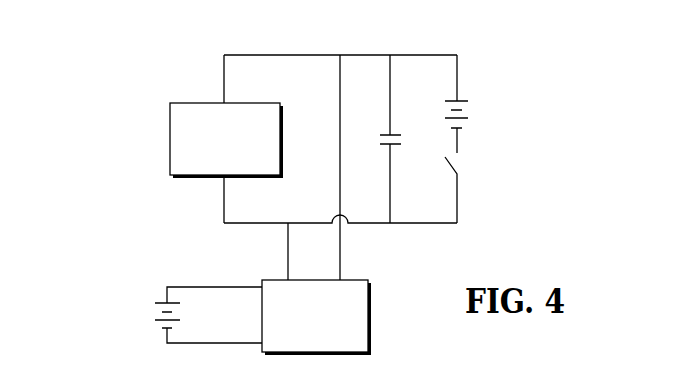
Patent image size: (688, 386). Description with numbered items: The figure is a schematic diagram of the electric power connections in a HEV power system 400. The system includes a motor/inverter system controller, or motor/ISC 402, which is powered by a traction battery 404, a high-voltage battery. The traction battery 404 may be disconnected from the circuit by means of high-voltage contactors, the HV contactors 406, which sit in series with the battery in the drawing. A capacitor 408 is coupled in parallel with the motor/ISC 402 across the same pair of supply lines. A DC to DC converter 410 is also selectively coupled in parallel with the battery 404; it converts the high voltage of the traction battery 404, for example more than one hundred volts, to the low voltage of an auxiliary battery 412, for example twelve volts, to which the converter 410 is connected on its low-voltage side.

The HEV power system 400 is at (575, 63).
The motor/inverter system controller (ISC) 402 is at (170, 138).
The traction battery 404 is at (460, 97).
The high-voltage (HV) contactors 406 is at (450, 166).
The capacitor 408 is at (388, 133).
The DC to DC converter 410 is at (371, 317).
The auxiliary battery 412 is at (165, 298).